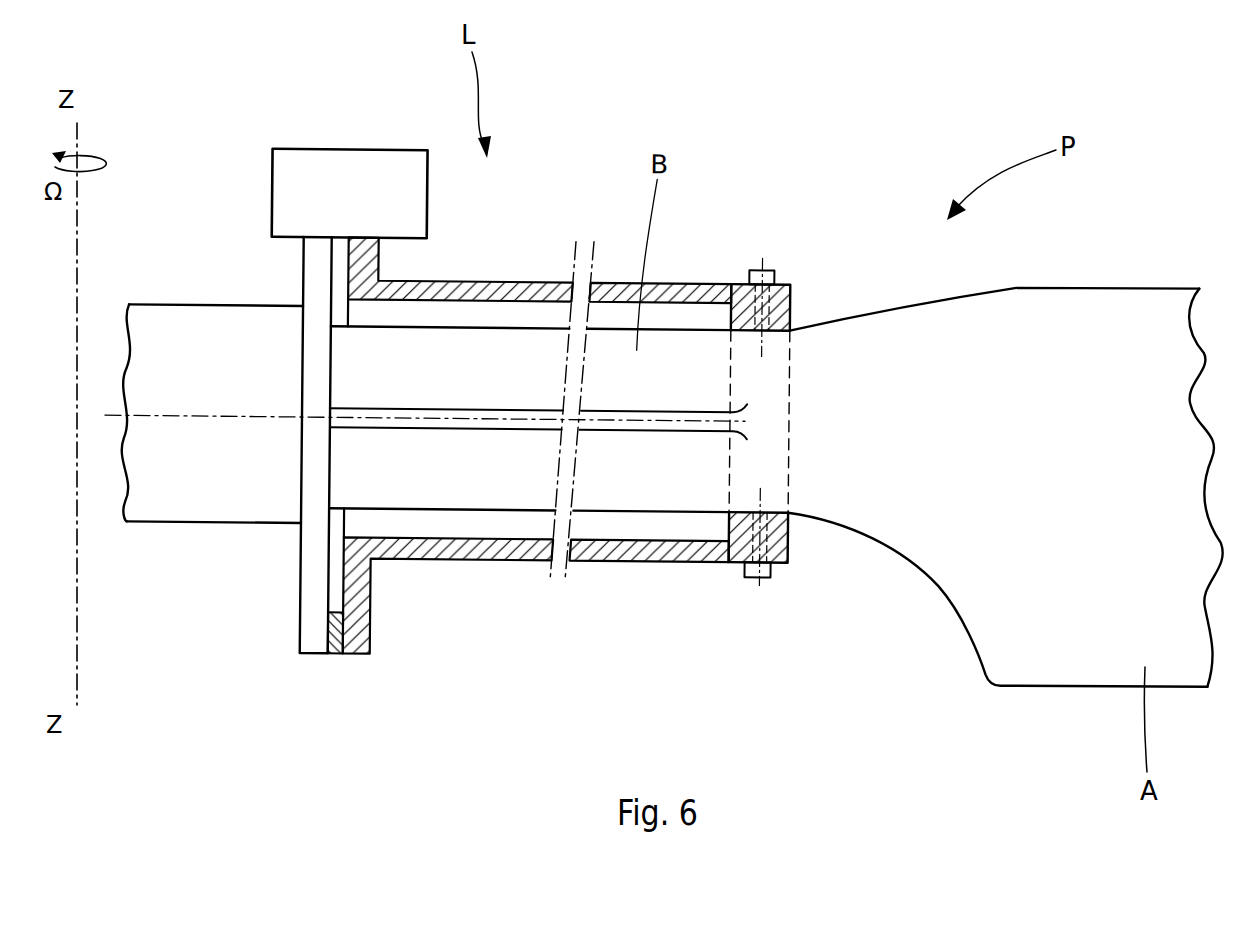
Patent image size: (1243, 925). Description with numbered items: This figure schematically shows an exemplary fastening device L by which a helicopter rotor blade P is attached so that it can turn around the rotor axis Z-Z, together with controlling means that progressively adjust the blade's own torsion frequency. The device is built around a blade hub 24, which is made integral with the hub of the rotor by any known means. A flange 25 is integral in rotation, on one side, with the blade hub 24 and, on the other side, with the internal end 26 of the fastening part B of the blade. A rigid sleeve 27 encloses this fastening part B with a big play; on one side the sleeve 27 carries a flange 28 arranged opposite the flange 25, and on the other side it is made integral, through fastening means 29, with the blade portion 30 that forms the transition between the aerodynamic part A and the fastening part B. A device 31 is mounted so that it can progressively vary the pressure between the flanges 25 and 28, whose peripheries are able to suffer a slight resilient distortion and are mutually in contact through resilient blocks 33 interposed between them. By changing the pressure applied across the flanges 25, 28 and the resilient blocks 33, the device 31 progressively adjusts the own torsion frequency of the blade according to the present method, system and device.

The blade hub 24 is at (200, 497).
The flange 25 is at (305, 620).
The internal end 26 is at (385, 460).
The rigid sleeve 27 is at (530, 545).
The flange 28 is at (365, 610).
The fastening means 29 is at (770, 272).
The blade portion 30 is at (820, 450).
The device 31 is at (332, 170).
The resilient blocks 33 is at (337, 625).